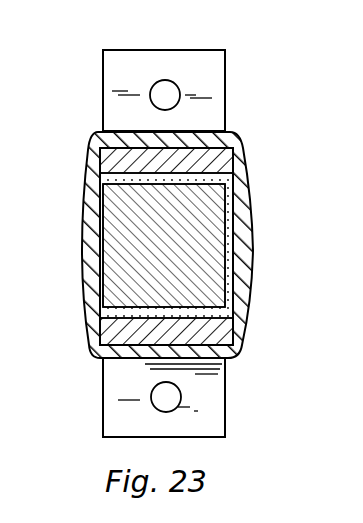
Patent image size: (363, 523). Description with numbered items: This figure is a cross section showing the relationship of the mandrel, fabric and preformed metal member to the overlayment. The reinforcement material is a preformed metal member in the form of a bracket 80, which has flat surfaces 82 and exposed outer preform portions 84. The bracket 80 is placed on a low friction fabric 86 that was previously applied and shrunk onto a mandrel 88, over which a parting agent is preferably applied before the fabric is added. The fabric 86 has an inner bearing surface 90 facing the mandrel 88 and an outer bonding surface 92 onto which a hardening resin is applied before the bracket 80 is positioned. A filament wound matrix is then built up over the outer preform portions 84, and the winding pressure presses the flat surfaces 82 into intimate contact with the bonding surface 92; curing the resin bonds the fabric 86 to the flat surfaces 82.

The bracket 80 is at (213, 50).
The flat surface 82 is at (94, 198).
The exposed outer preform portion 84 is at (212, 97).
The low friction fabric 86 is at (232, 177).
The mandrel 88 is at (205, 245).
The inner bearing surface 90 is at (118, 292).
The outer bonding surface 92 is at (130, 323).